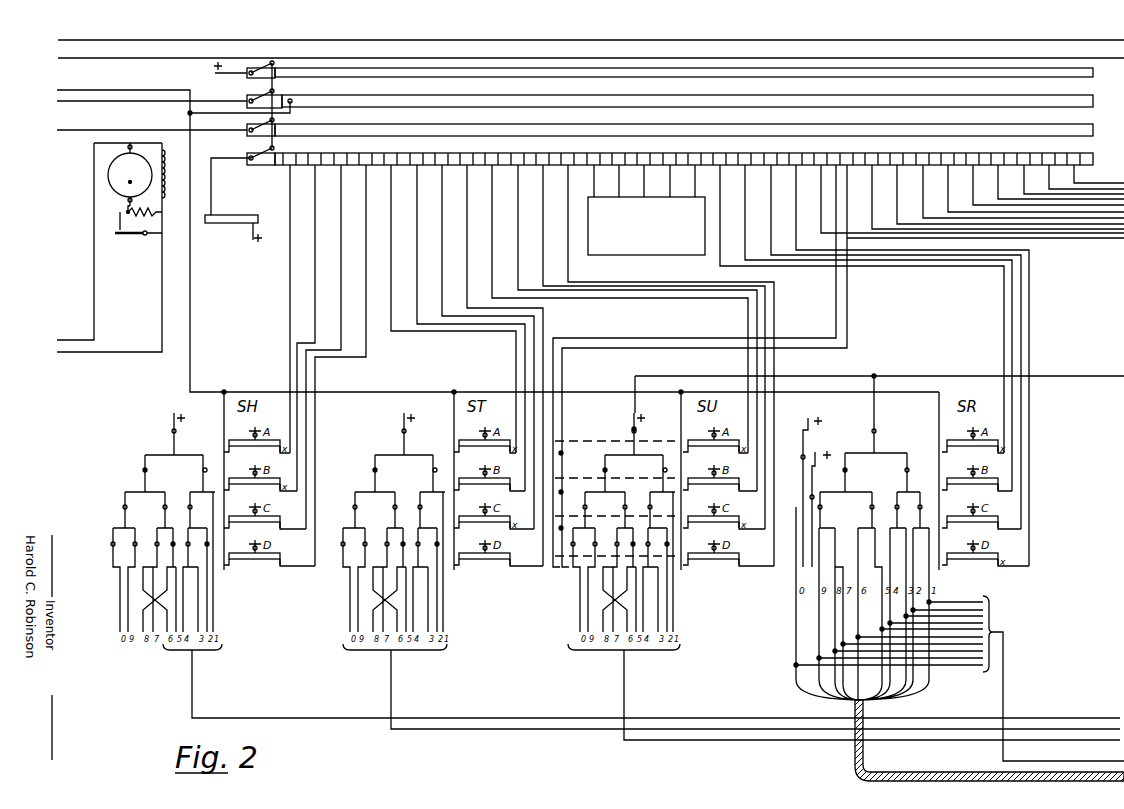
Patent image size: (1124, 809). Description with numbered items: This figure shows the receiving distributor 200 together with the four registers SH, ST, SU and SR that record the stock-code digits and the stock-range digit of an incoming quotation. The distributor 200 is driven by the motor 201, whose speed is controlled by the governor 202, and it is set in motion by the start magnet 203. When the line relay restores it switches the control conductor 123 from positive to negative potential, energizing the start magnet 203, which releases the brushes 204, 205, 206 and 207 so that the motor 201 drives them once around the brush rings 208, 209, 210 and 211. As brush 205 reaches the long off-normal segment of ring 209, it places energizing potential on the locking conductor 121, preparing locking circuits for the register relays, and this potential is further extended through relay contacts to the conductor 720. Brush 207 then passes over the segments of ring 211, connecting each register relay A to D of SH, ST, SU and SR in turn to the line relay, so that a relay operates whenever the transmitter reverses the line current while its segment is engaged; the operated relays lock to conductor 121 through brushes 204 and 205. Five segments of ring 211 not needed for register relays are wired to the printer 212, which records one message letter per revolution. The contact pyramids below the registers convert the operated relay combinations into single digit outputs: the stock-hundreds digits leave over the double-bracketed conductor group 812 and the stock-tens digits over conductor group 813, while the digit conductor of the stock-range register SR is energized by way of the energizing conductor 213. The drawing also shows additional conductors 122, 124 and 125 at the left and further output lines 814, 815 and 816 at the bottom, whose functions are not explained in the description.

The conductor 720 is at (591, 41).
The locking conductor 121 is at (498, 233).
The control line 122 is at (152, 111).
The control conductor 123 is at (152, 141).
The motor supply line 124 is at (75, 241).
The motor supply line 125 is at (109, 259).
The receiving distributor 200 is at (655, 89).
The distributor motor 201 is at (108, 183).
The governor 202 is at (130, 235).
The start magnet 203 is at (232, 224).
The brush 204 is at (270, 60).
The brush 205 is at (270, 91).
The brush 206 is at (270, 121).
The brush 207 is at (270, 149).
The brush ring 208 is at (697, 74).
The brush ring 209 is at (701, 102).
The brush ring 210 is at (697, 130).
The segmented brush ring 211 is at (697, 158).
The printer 212 is at (656, 255).
The energizing conductor 213 is at (879, 407).
The conductor group 812 is at (192, 700).
The conductor group 813 is at (391, 700).
The output line 814 is at (624, 700).
The output line 815 is at (1008, 690).
The cable 816 is at (855, 756).